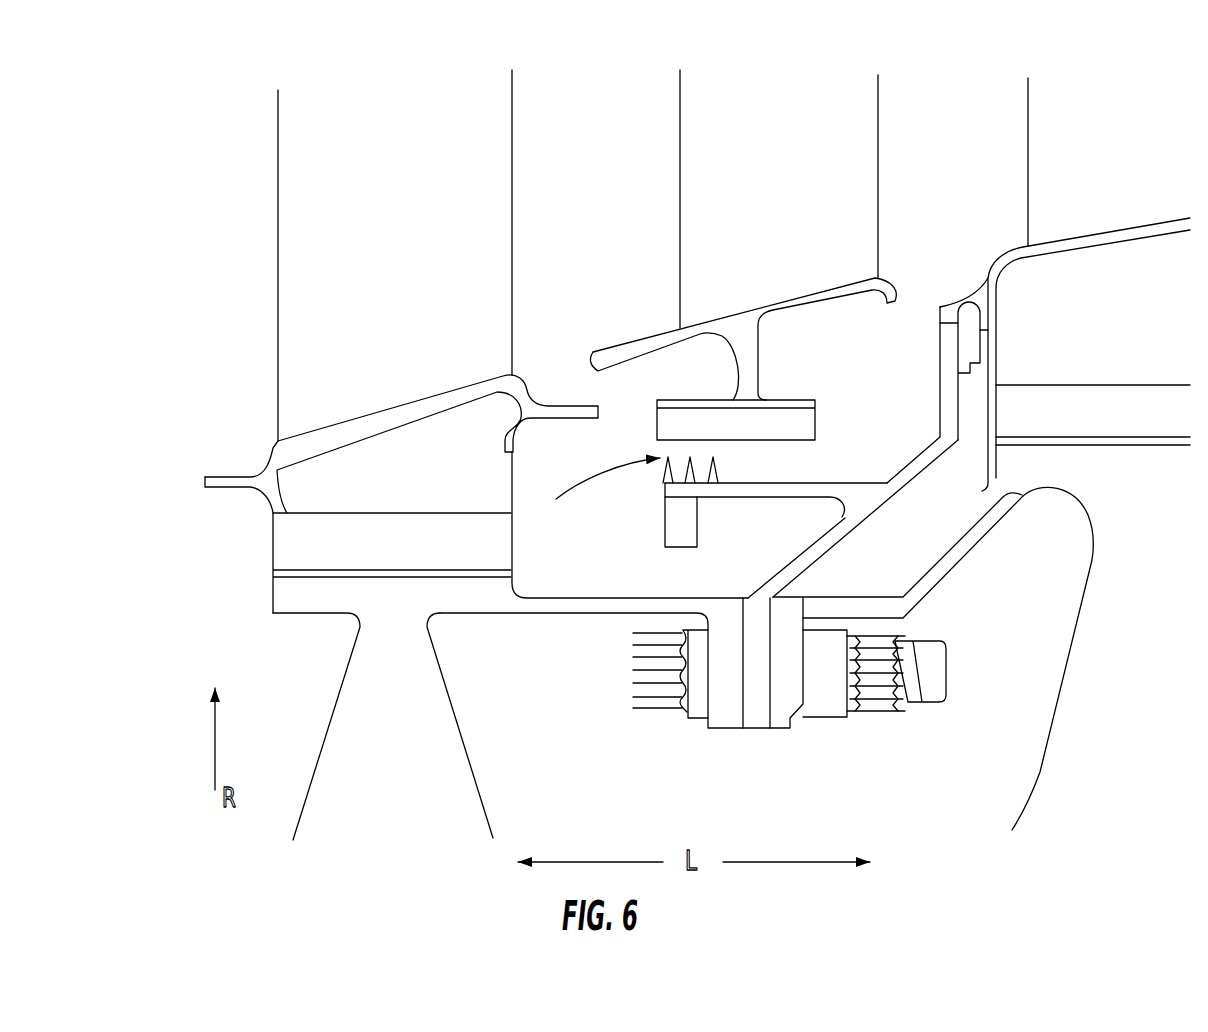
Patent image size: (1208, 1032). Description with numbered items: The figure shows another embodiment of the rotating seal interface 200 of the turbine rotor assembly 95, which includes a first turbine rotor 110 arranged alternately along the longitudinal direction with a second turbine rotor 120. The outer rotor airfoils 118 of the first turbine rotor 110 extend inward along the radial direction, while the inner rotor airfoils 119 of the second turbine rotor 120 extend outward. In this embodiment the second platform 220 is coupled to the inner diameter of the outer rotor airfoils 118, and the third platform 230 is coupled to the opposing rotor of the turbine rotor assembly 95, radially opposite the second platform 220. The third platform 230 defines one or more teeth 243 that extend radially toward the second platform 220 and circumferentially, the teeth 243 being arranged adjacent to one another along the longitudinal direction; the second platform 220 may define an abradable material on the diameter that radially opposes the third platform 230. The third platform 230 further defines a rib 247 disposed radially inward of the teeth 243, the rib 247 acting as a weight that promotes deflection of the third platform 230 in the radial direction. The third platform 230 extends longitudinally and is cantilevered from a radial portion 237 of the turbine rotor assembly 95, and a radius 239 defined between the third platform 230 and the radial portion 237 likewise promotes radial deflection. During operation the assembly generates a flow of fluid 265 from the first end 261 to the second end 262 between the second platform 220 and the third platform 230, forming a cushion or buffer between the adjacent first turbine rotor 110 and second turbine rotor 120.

The turbine rotor assembly 95 is at (745, 60).
The first turbine rotor 110 is at (903, 180).
The outer rotor airfoils 118 is at (768, 213).
The inner rotor airfoils 119 is at (382, 273).
The second turbine rotor 120 is at (553, 651).
The rotating seal interface 200 is at (808, 354).
The second platform 220 is at (803, 424).
The third platform 230 is at (739, 490).
The radial portion 237 is at (884, 517).
The radius 239 is at (823, 512).
The teeth 243 is at (660, 473).
The rib 247 is at (681, 530).
The first end 261 is at (615, 454).
The second end 262 is at (893, 425).
The flow of fluid 265 is at (572, 487).